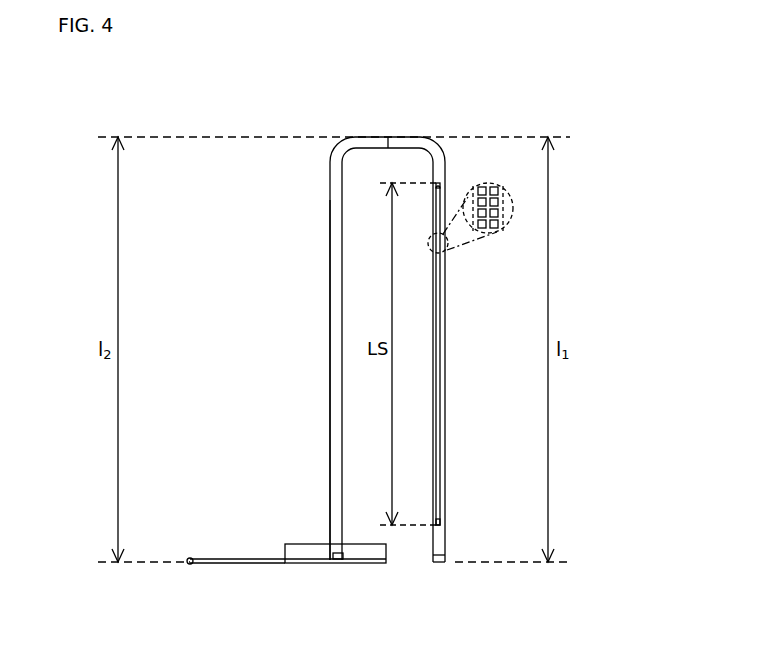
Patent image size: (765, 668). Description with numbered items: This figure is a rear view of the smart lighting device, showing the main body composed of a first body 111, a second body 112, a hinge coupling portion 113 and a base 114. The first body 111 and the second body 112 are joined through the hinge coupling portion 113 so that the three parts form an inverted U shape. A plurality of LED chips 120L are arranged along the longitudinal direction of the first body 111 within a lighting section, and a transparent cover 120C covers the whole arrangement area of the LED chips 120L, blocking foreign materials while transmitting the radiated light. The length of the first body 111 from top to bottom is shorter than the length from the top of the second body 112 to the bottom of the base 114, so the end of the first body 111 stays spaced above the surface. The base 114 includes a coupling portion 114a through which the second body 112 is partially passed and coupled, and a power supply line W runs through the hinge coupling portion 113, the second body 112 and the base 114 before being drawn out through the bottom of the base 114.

The first body 111 is at (436, 150).
The second body 112 is at (333, 150).
The hinge coupling portion 113 is at (388, 137).
The base 114 is at (305, 552).
The coupling portion 114a is at (348, 560).
The transparent cover 120C is at (441, 268).
The LED chips 120L is at (482, 185).
The power supply line W is at (190, 565).